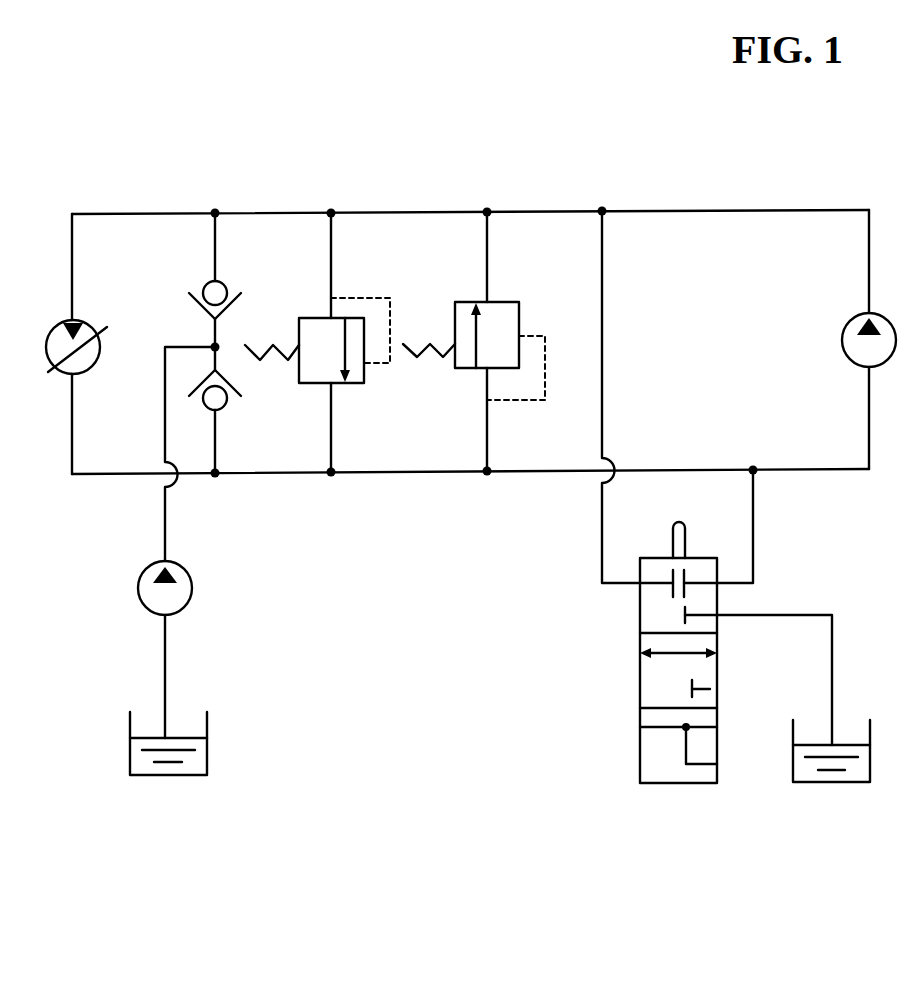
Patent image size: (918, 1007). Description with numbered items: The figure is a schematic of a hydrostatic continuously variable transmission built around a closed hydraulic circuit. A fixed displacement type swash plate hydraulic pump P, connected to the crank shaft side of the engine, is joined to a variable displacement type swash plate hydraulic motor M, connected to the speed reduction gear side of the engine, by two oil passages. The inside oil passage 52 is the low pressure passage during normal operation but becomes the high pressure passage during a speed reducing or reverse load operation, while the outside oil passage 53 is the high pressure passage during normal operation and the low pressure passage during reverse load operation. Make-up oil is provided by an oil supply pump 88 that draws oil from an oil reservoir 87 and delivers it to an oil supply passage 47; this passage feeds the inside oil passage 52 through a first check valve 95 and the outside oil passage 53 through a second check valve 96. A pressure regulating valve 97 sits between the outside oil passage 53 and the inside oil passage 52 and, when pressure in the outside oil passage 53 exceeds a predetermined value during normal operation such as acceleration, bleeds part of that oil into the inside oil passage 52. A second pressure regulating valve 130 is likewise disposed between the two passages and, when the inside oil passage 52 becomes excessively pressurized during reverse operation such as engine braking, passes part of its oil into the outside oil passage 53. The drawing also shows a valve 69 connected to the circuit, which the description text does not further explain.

The oil supply passage 47 is at (165, 408).
The inside oil passage 52 is at (413, 472).
The outside oil passage 53 is at (392, 212).
The directional control valve 69 is at (640, 682).
The oil reservoir 87 is at (207, 745).
The oil supply pump 88 is at (193, 585).
The first check valve 95 is at (240, 397).
The second check valve 96 is at (193, 295).
The pressure regulating valve 97 is at (310, 318).
The second pressure regulating valve 130 is at (507, 300).
The hydraulic motor M is at (63, 322).
The hydraulic pump P is at (843, 342).